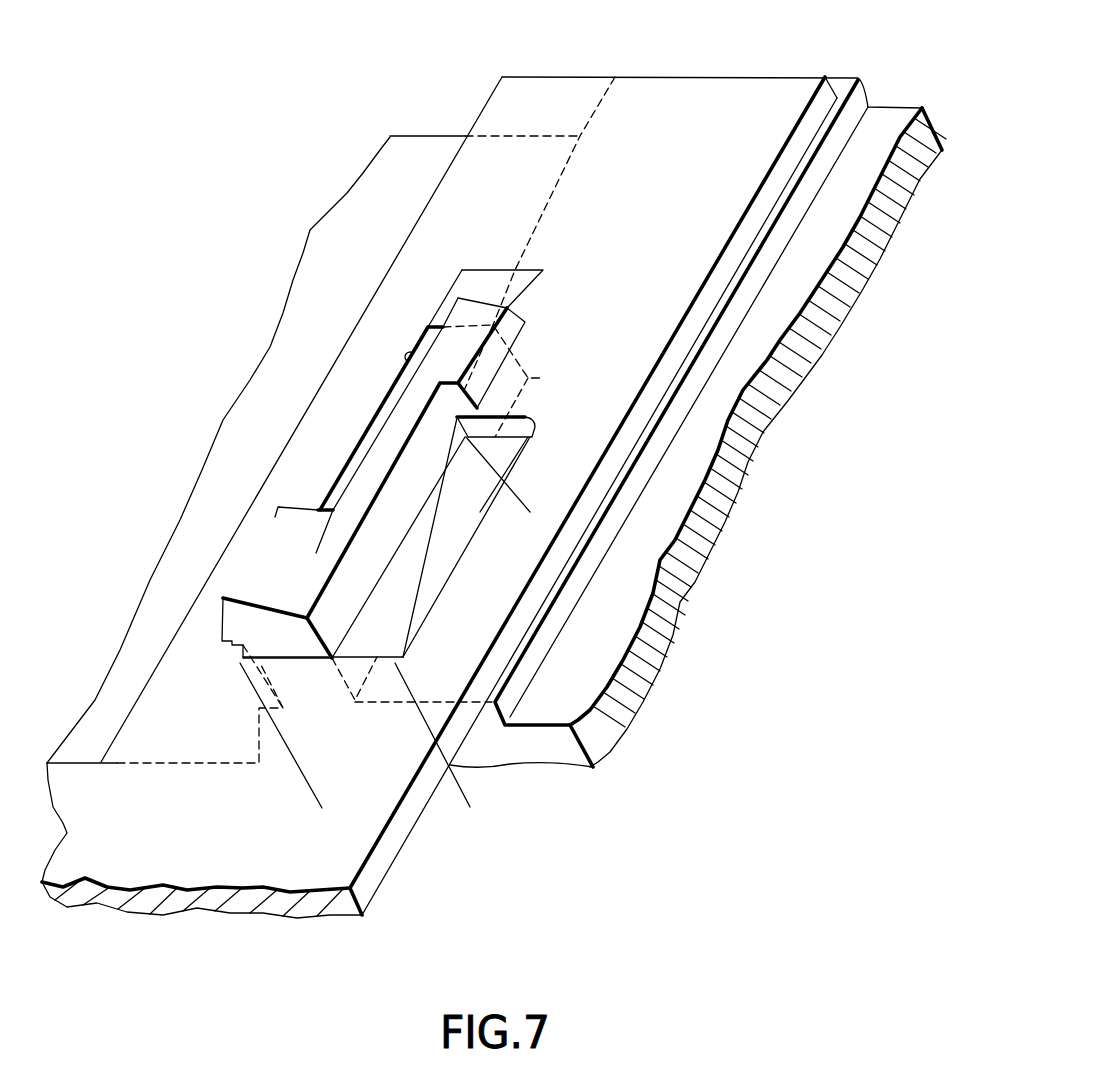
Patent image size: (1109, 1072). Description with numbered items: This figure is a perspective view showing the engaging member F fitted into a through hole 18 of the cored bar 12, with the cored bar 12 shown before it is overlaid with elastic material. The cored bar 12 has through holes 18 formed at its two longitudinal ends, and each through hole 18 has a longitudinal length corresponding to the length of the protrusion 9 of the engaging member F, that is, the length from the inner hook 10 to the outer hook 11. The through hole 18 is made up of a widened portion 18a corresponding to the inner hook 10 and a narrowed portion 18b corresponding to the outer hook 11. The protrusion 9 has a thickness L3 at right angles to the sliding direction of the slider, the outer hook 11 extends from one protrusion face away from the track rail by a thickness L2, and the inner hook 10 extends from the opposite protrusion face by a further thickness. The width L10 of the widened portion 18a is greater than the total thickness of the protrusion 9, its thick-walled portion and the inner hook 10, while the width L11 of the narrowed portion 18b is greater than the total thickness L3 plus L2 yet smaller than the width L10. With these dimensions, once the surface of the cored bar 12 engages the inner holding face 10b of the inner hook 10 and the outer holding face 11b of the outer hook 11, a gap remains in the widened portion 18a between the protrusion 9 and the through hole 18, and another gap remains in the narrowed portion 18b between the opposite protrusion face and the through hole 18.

The protrusion 9 is at (390, 433).
The inner hook 10 is at (280, 517).
The inner holding face 10b is at (222, 645).
The outer hook 11 is at (463, 317).
The outer holding face 11b is at (505, 383).
The cored bar 12 is at (763, 97).
The through hole 18 is at (468, 560).
The widened portion 18a is at (440, 592).
The narrowed portion 18b is at (413, 350).
The engaging member F is at (307, 233).
The width of the narrowed portion L11 is at (543, 270).
The thickness of the protrusion L3 is at (381, 532).
The protruding thickness of the outer hook L2 is at (555, 510).
The width of the widened portion L10 is at (322, 803).